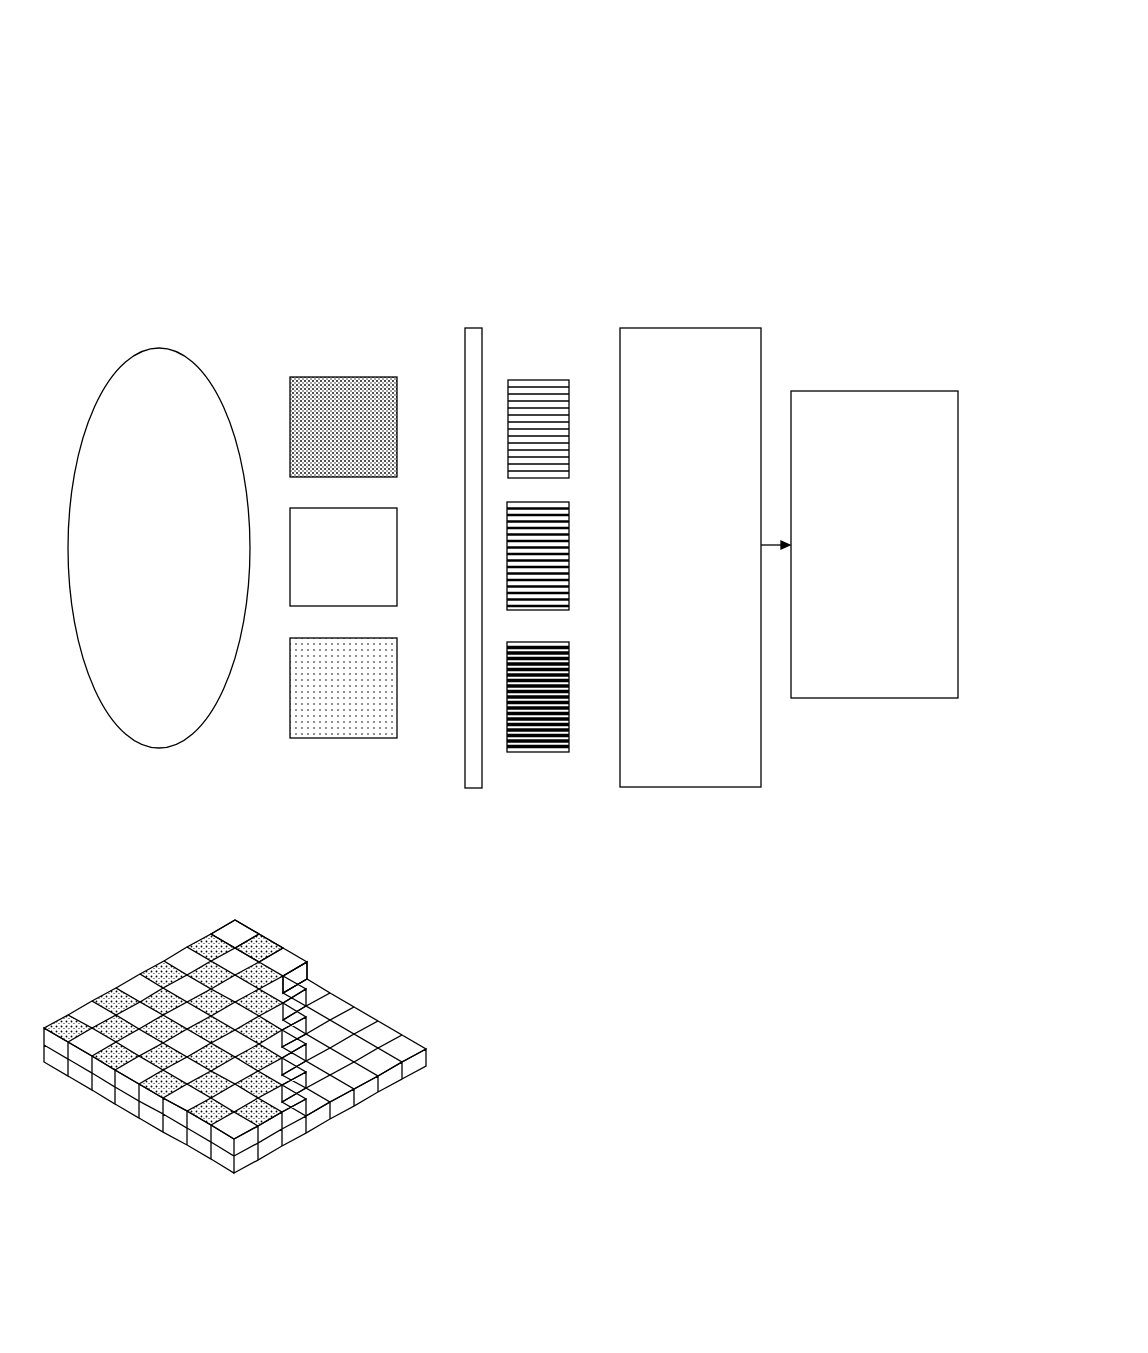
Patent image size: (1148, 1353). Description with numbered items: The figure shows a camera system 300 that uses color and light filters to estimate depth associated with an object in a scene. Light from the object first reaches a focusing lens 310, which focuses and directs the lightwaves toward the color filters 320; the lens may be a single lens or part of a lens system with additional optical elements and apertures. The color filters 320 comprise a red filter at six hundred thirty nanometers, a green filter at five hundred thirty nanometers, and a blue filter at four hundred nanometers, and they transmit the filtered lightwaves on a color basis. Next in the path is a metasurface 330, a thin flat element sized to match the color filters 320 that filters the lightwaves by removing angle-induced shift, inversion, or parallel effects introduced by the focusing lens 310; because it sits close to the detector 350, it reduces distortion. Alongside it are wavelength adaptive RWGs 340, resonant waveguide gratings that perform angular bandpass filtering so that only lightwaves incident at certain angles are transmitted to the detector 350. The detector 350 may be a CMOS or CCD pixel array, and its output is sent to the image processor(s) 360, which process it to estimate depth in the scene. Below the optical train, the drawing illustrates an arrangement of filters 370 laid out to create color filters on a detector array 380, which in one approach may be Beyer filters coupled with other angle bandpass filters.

The camera system 300 is at (728, 72).
The focusing lens 310 is at (128, 358).
The color filters 320 is at (348, 332).
The metasurface 330 is at (480, 788).
The wavelength adaptive RWGs 340 is at (545, 752).
The detector 350 is at (707, 328).
The image processor(s) 360 is at (907, 698).
The filters 370 is at (270, 942).
The detector array 380 is at (387, 1022).